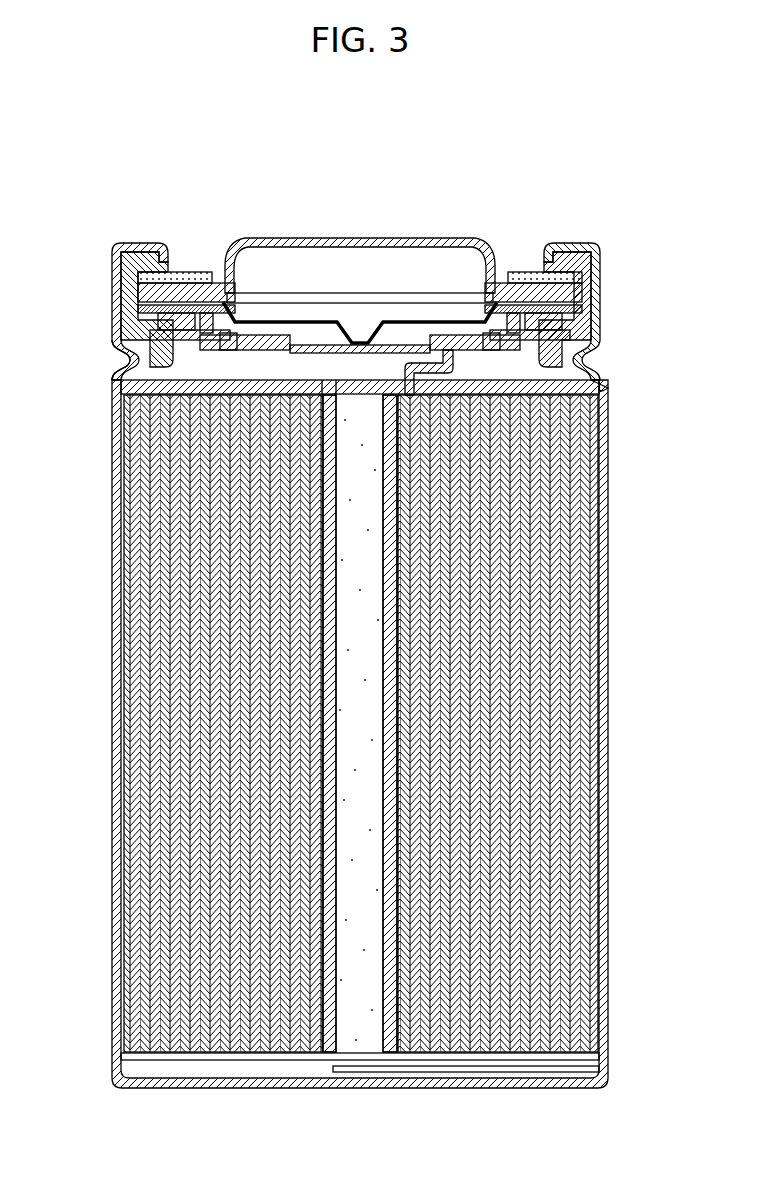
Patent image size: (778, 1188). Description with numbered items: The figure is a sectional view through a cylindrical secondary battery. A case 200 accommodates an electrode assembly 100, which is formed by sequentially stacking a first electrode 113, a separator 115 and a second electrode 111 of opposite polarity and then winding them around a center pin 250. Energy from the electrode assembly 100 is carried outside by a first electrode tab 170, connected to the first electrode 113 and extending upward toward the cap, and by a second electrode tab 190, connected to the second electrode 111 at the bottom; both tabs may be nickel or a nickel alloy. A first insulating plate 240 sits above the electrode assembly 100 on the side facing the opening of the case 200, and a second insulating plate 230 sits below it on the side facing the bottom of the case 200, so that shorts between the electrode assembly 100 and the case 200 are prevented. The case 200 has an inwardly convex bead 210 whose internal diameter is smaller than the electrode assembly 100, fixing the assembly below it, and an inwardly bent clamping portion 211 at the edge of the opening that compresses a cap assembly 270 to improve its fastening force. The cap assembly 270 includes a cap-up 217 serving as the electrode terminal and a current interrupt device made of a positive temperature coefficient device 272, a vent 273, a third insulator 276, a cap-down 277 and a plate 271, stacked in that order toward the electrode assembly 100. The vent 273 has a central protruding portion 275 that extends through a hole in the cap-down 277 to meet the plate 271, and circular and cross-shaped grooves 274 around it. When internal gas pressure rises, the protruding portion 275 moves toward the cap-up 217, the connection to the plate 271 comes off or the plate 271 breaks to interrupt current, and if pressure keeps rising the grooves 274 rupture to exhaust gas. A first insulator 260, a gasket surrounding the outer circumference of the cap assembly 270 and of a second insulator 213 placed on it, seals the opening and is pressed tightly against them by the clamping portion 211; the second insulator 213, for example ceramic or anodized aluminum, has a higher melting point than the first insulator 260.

The electrode assembly 100 is at (714, 337).
The second electrode 111 is at (575, 560).
The first electrode 113 is at (588, 489).
The separator 115 is at (586, 452).
The first electrode tab 170 is at (454, 366).
The second electrode tab 190 is at (522, 1081).
The case 200 is at (113, 466).
The bead 210 is at (112, 357).
The clamping portion 211 is at (140, 247).
The second insulator 213 is at (548, 249).
The cap-up 217 is at (388, 239).
The second insulating plate 230 is at (237, 1062).
The first insulating plate 240 is at (121, 388).
The center pin 250 is at (352, 548).
The first insulator 260 is at (594, 293).
The cap assembly 270 is at (360, 239).
The plate 271 is at (456, 293).
The positive temperature coefficient device 272 is at (522, 320).
The vent 273 is at (179, 272).
The grooves 274 is at (172, 167).
The protruding portion 275 is at (350, 340).
The third insulator 276 is at (215, 283).
The cap-down 277 is at (268, 305).